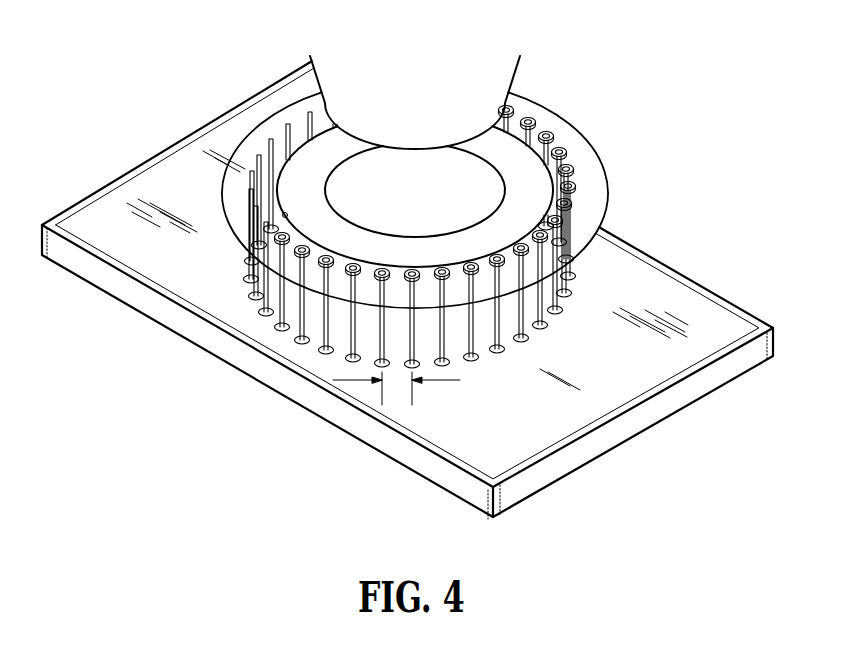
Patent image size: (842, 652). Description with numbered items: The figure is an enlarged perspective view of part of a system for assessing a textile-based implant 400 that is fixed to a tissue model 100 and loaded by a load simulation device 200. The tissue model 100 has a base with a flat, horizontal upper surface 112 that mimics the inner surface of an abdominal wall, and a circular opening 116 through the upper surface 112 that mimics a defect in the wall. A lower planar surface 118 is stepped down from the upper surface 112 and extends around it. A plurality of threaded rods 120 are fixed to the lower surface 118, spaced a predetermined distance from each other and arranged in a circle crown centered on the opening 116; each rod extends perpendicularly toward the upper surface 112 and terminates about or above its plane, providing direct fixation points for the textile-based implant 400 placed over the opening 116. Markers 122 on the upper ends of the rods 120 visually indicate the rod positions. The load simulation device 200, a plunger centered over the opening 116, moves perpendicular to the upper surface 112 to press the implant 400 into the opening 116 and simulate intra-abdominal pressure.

The tissue model 100 is at (273, 83).
The upper surface 112 is at (533, 196).
The opening 116 is at (430, 198).
The lower planar surface 118 is at (543, 420).
The rods 120 is at (509, 95).
The markers 122 is at (560, 148).
The load simulation device 200 is at (430, 104).
The textile-based implant 400 is at (593, 172).